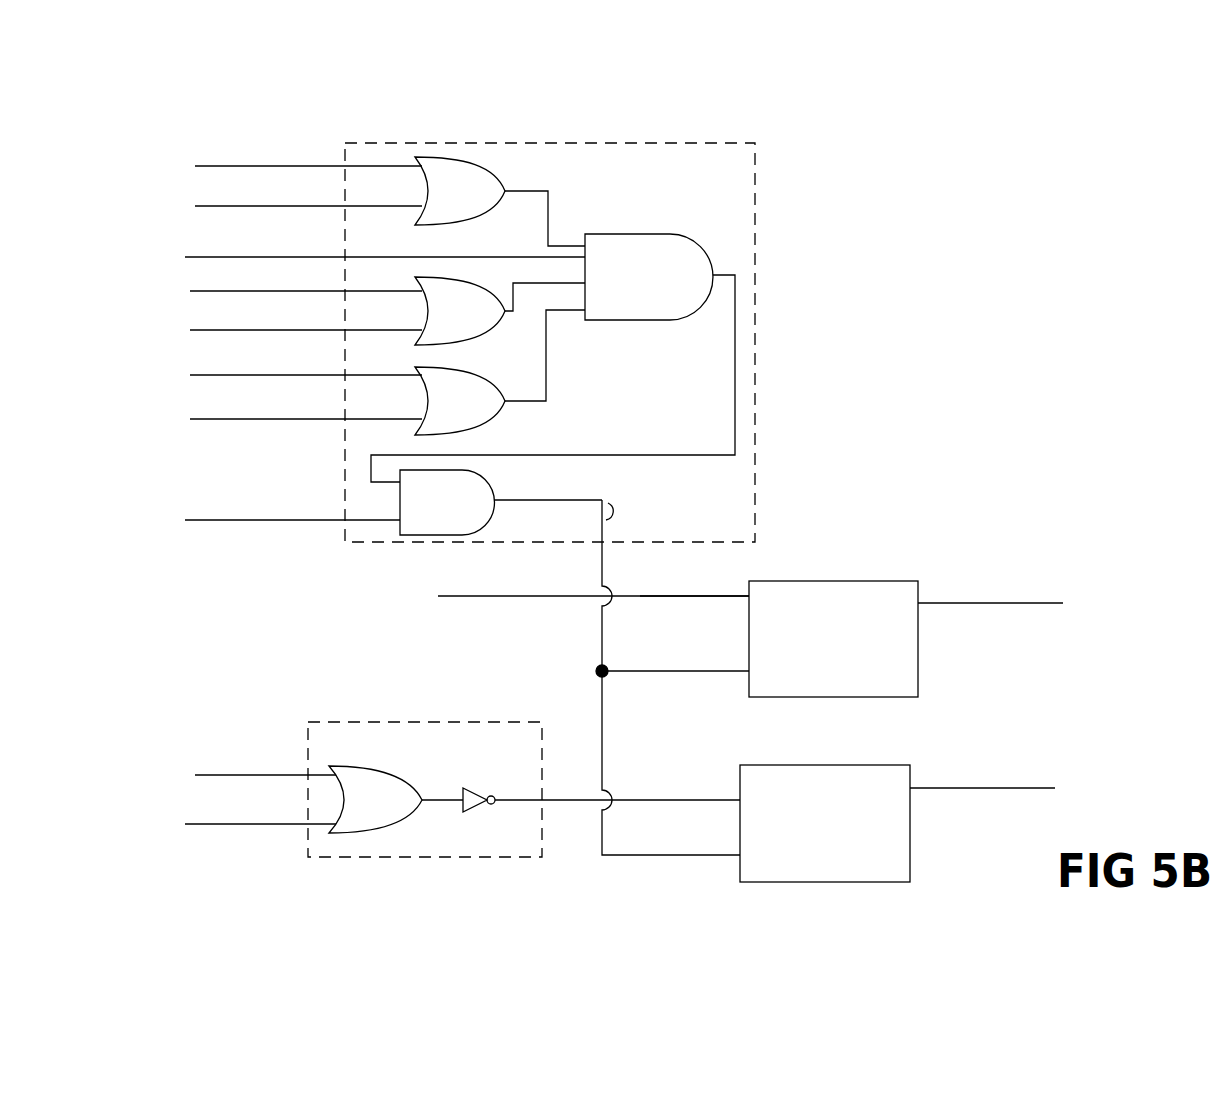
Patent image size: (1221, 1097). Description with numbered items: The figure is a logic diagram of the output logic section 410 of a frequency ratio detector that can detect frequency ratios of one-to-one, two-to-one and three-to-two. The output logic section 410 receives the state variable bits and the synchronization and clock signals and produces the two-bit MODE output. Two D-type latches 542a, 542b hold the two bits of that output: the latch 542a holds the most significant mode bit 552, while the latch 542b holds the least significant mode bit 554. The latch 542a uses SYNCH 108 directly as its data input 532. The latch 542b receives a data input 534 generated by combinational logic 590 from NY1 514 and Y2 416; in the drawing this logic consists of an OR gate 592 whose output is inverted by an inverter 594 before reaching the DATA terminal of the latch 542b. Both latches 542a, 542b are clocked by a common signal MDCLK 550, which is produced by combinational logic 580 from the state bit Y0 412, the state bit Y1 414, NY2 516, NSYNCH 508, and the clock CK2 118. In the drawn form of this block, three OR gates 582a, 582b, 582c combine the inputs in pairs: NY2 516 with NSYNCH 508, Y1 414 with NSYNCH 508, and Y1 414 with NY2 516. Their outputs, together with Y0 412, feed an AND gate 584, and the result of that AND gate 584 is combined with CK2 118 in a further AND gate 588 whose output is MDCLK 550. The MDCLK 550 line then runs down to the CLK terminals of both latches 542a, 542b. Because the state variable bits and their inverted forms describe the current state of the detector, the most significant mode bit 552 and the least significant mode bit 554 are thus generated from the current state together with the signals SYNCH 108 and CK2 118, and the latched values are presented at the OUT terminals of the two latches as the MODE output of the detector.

The output logic section 410 is at (863, 66).
The combinational logic 580 is at (370, 142).
The OR gate 582a is at (493, 198).
The OR gate 582b is at (493, 318).
The OR gate 582c is at (493, 408).
The AND gate 584 is at (660, 285).
The AND gate 588 is at (465, 510).
The MDCLK signal 550 is at (667, 662).
The SYNCH signal 108 is at (593, 576).
The data input 532 is at (656, 596).
The data input 534 is at (646, 800).
The D-type latch 542a is at (836, 580).
The D-type latch 542b is at (852, 765).
The MODE(0) signal 552 is at (990, 581).
The MODE(1) signal 554 is at (982, 772).
The combinational logic 590 is at (386, 722).
The OR gate 592 is at (400, 806).
The inverter 594 is at (468, 793).
The NY2 signal 516 is at (306, 273).
The NSYNCH signal 508 is at (306, 251).
The state variable bit Y0 412 is at (385, 238).
The state variable bit Y1 414 is at (306, 318).
The CK2 clock signal 118 is at (292, 503).
The NY1 signal 514 is at (265, 754).
The state variable bit Y2 416 is at (260, 808).